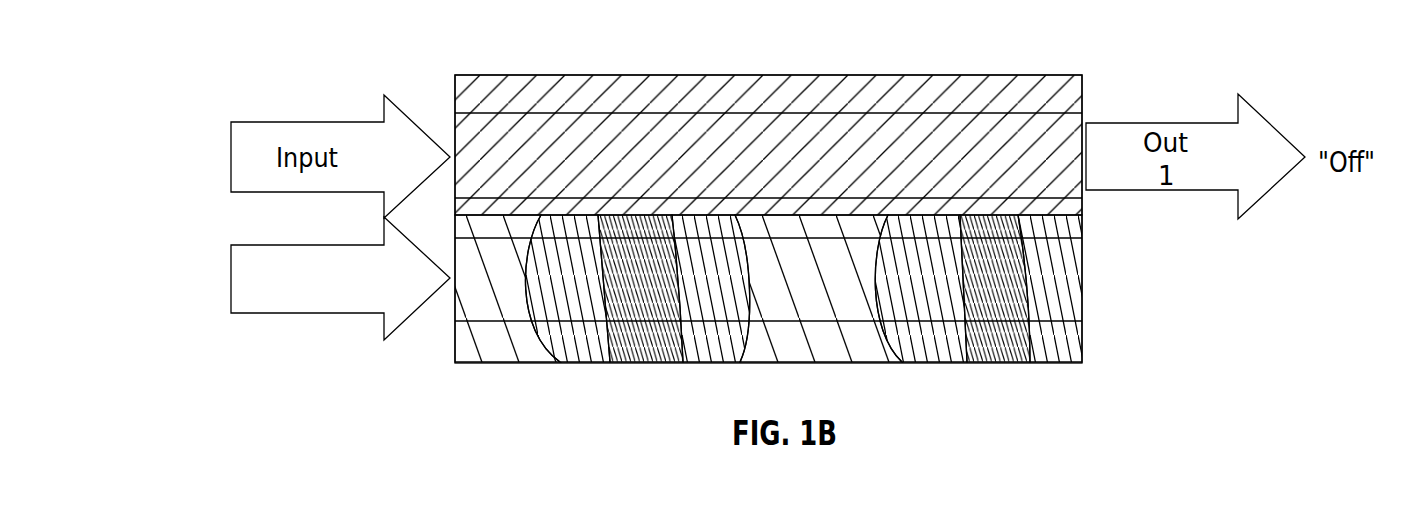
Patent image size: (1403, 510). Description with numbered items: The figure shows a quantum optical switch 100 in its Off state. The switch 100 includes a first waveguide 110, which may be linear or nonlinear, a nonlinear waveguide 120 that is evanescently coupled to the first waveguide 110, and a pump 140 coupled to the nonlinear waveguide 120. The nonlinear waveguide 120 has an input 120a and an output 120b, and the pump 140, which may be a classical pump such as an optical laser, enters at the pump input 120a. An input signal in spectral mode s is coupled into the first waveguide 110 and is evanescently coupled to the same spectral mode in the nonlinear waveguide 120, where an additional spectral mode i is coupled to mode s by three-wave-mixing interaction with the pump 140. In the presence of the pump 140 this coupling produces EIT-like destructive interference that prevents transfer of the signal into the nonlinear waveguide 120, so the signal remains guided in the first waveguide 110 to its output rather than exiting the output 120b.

The quantum optical switch 100 is at (272, 68).
The first waveguide 110 is at (900, 155).
The nonlinear waveguide 120 is at (1000, 310).
The input of the nonlinear waveguide 120a is at (453, 315).
The output of the nonlinear waveguide 120b is at (1082, 283).
The pump 140 is at (308, 314).